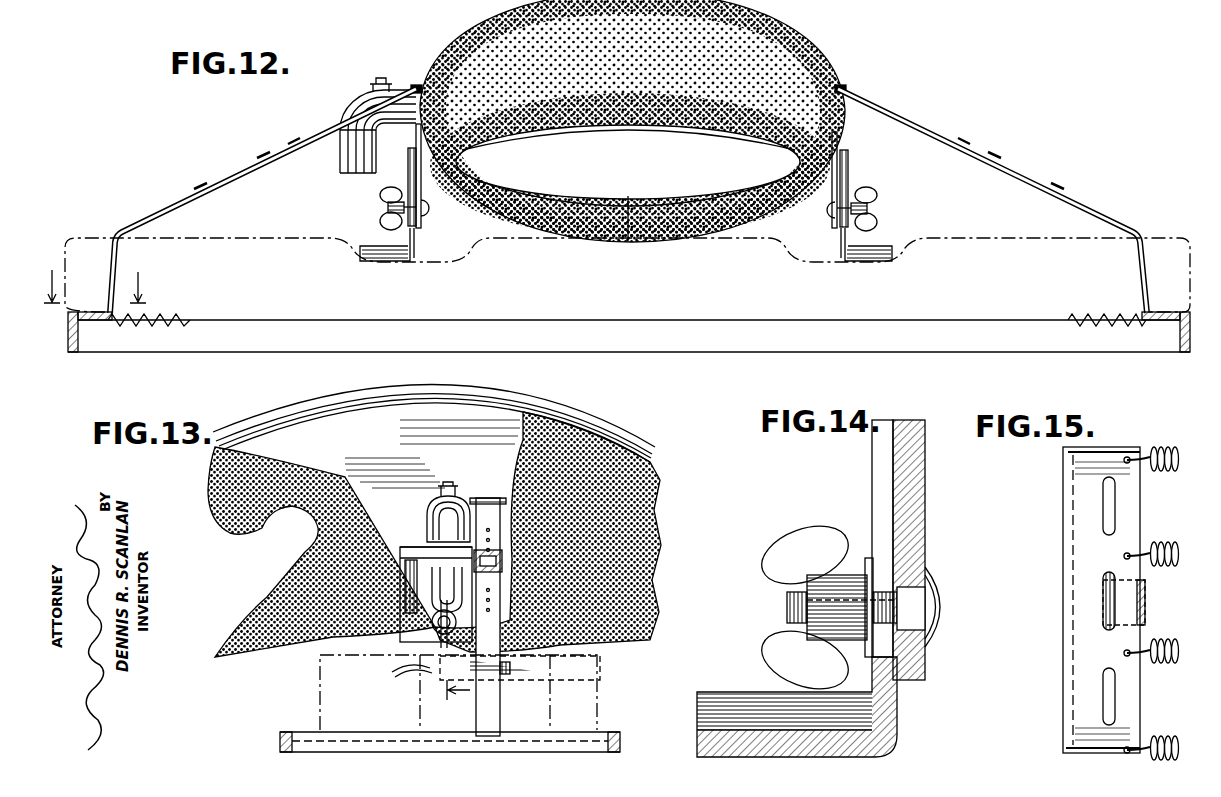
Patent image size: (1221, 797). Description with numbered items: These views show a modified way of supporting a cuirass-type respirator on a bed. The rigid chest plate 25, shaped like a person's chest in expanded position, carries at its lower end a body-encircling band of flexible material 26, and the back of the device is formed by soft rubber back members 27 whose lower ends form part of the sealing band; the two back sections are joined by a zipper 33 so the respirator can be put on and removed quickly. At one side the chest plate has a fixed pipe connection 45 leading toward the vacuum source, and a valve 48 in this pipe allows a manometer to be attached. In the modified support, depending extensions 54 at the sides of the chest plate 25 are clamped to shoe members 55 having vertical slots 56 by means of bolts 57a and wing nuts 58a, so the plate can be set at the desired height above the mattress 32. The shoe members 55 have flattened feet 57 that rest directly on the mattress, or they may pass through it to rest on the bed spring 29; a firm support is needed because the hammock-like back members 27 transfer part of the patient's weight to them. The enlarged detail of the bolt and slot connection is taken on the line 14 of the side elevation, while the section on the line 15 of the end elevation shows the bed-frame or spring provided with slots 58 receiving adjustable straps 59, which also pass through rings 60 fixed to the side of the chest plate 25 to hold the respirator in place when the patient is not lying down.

In FIG. 13, the section line 14— 14 is at (448, 692).
In FIG. 12, the section line 15— 15 is at (99, 274).
In FIG. 12, the chest plate 25 is at (800, 25).
In FIG. 13, the chest plate 25 is at (484, 402).
In FIG. 12, the band of flexible material 26 is at (600, 118).
In FIG. 13, the band of flexible material 26 is at (625, 430).
In FIG. 12, the back members 27 is at (652, 210).
In FIG. 12, the bed spring 29 is at (78, 345).
In FIG. 13, the bed spring 29 is at (605, 733).
In FIG. 15, the bed spring 29 is at (1078, 657).
In FIG. 12, the mattress 32 is at (300, 238).
In FIG. 13, the mattress 32 is at (320, 700).
In FIG. 12, the zipper 33 is at (628, 240).
In FIG. 12, the pipe connection 45 is at (343, 106).
In FIG. 13, the pipe connection 45 is at (432, 496).
In FIG. 12, the valve 48 is at (377, 78).
In FIG. 13, the valve 48 is at (450, 484).
In FIG. 12, the depending extensions 54 is at (421, 176).
In FIG. 13, the depending extensions 54 is at (415, 597).
In FIG. 14, the depending extensions 54 is at (925, 503).
In FIG. 12, the shoe members 55 is at (409, 171).
In FIG. 13, the shoe members 55 is at (430, 570).
In FIG. 13, the vertical slots 56 is at (455, 595).
In FIG. 14, the vertical slots 56 is at (882, 501).
In FIG. 12, the feet 57 is at (403, 262).
In FIG. 13, the feet 57 is at (418, 670).
In FIG. 14, the feet 57 is at (728, 712).
In FIG. 12, the bolts 57a is at (434, 210).
In FIG. 13, the bolts 57a is at (510, 674).
In FIG. 14, the bolts 57a is at (912, 605).
In FIG. 12, the slots 58 is at (100, 312).
In FIG. 15, the slots 58 is at (1115, 512).
In FIG. 12, the wing nuts 58a is at (381, 196).
In FIG. 13, the wing nuts 58a is at (431, 622).
In FIG. 14, the wing nuts 58a is at (785, 538).
In FIG. 12, the adjustable straps 59 is at (240, 178).
In FIG. 13, the adjustable straps 59 is at (498, 586).
In FIG. 15, the adjustable straps 59 is at (1142, 606).
In FIG. 12, the rings 60 is at (418, 86).
In FIG. 13, the rings 60 is at (503, 498).